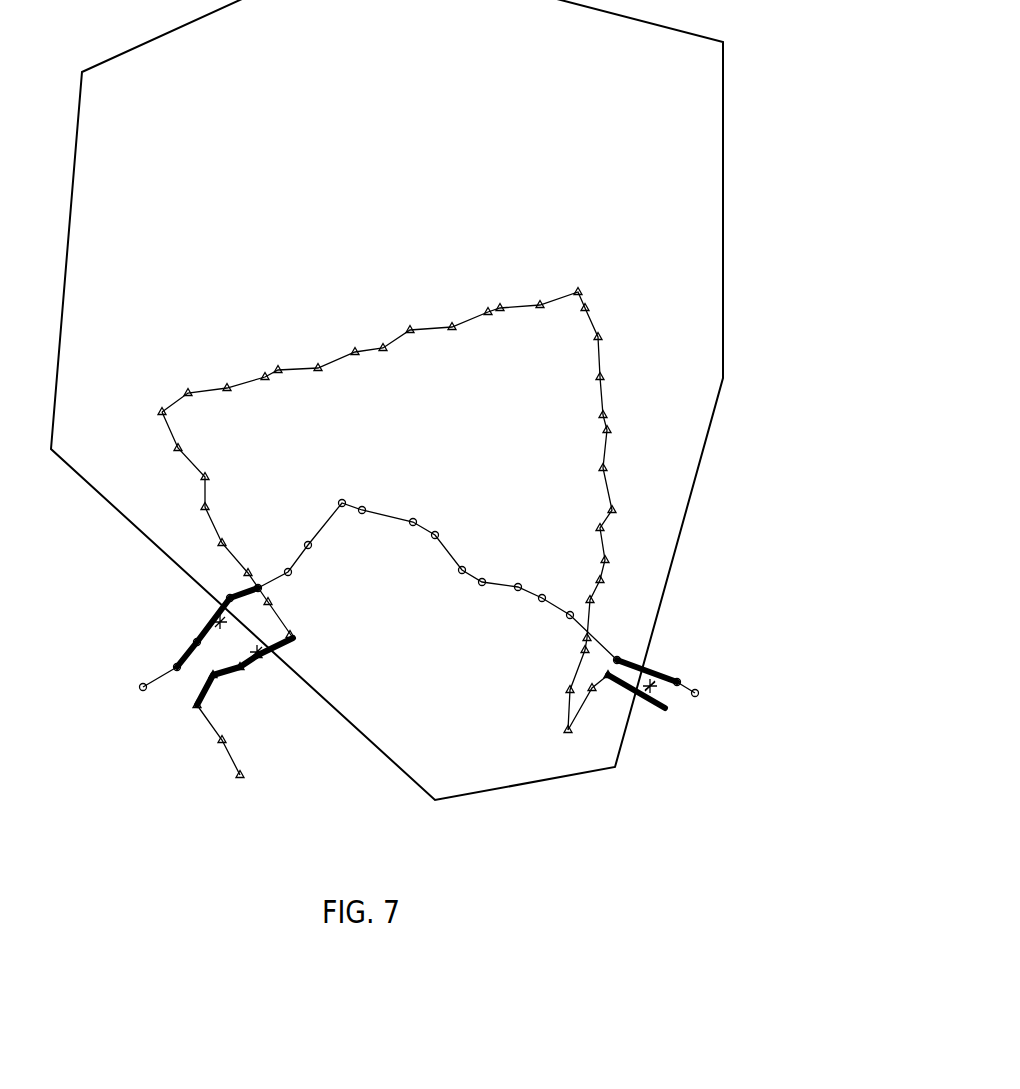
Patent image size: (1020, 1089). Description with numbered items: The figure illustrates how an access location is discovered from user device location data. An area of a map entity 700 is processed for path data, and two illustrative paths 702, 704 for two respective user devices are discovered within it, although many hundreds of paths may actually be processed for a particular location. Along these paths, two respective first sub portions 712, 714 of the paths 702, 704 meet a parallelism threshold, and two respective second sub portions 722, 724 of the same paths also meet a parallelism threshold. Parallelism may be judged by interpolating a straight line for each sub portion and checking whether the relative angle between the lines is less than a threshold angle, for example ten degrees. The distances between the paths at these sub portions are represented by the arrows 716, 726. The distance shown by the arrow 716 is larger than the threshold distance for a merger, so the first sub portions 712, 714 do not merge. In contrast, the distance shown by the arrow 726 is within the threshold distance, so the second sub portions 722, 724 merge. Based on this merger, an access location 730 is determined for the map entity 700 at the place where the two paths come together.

The map entity 700 is at (723, 177).
The path 702 is at (243, 774).
The path 704 is at (141, 686).
The first sub portion 712 is at (293, 638).
The first sub portion 714 is at (183, 641).
The arrow 716 is at (225, 628).
The second sub portion 722 is at (660, 703).
The second sub portion 724 is at (678, 680).
The arrow 726 is at (648, 685).
The access location 730 is at (647, 668).